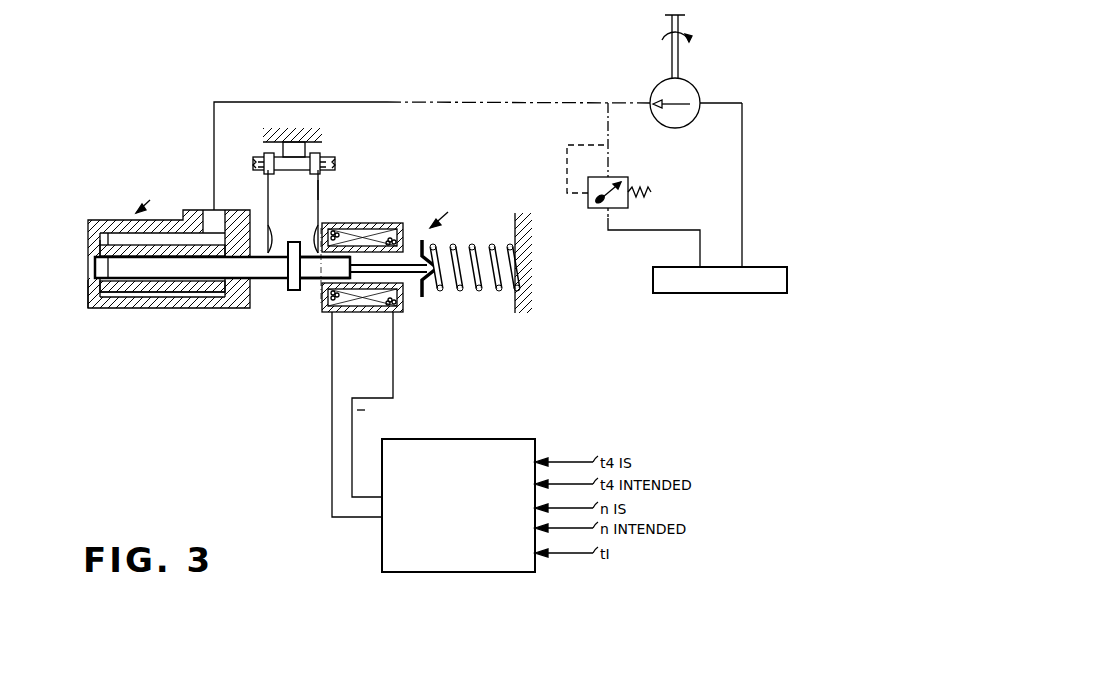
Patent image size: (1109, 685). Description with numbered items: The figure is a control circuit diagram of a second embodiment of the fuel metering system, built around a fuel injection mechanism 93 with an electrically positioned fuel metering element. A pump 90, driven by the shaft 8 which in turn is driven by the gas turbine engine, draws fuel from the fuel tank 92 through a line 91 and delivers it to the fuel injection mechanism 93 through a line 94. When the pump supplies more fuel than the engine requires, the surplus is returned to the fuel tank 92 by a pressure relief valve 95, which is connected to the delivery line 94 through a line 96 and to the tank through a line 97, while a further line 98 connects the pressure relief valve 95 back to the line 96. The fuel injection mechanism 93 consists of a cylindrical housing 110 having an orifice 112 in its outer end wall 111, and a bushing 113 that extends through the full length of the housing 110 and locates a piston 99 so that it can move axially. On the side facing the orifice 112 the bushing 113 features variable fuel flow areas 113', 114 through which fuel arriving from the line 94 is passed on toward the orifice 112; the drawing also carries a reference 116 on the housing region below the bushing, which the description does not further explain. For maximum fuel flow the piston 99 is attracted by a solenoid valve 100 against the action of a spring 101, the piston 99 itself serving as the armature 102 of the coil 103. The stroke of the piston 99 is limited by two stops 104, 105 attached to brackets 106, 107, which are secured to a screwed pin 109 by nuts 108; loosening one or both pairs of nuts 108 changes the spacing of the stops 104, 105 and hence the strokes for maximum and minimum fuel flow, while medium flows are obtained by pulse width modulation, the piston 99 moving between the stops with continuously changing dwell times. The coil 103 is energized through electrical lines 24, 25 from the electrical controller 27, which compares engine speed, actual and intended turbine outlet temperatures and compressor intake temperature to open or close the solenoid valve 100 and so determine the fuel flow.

The shaft 8 is at (672, 55).
The electrical line 24 is at (332, 467).
The electrical line 25 is at (395, 378).
The electrical controller 27 is at (385, 575).
The pump 90 is at (698, 95).
The line 91 is at (742, 155).
The fuel tank 92 is at (712, 293).
The fuel injection mechanism 93 is at (153, 198).
The line 94 is at (432, 139).
The pressure relief valve 95 is at (605, 214).
The line 96 is at (608, 135).
The line 97 is at (638, 230).
The line 98 is at (567, 160).
The piston 99 is at (292, 290).
The solenoid valve 100 is at (451, 213).
The spring 101 is at (455, 290).
The armature 102 is at (322, 283).
The coil 103 is at (375, 225).
The stop 104 is at (270, 250).
The stop 105 is at (318, 250).
The bracket 106 is at (262, 165).
The bracket 107 is at (318, 190).
The nuts 108 is at (322, 142).
The screwed pin 109 is at (294, 170).
The cylindrical housing 110 is at (195, 300).
The outer end wall 111 is at (88, 300).
The orifice 112 is at (88, 264).
The bushing 113 is at (162, 310).
The variable fuel flow area 113' is at (162, 220).
The variable fuel flow area 114 is at (118, 286).
The pressure chamber 116 is at (222, 292).